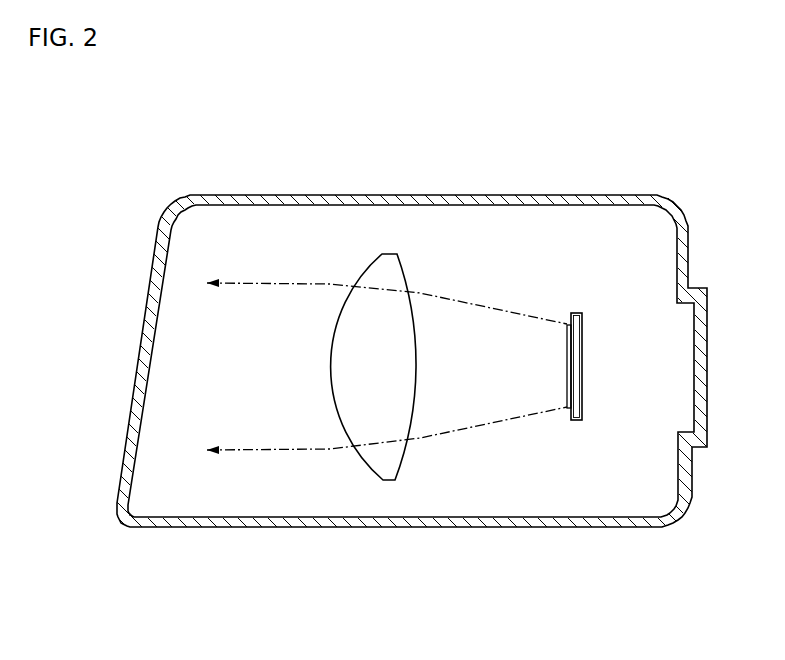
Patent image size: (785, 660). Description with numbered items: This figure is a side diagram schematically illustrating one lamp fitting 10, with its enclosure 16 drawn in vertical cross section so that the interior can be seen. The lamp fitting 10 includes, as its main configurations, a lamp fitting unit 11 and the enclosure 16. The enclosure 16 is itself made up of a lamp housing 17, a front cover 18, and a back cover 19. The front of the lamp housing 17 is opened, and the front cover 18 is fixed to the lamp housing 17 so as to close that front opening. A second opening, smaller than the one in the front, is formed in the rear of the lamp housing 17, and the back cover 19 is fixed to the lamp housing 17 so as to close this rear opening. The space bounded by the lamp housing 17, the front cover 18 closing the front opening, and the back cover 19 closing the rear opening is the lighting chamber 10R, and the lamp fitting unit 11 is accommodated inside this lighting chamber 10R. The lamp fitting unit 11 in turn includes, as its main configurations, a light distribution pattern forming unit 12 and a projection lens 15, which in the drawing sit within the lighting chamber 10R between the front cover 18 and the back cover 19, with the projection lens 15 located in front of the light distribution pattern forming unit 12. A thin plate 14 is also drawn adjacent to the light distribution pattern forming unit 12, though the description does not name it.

The lamp fitting 10 is at (140, 126).
The lighting chamber 10R is at (672, 470).
The lamp fitting unit 11 is at (548, 460).
The light distribution pattern forming unit 12 is at (577, 302).
The filter plate 14 is at (573, 320).
The projection lens 15 is at (378, 275).
The enclosure 16 is at (708, 142).
The lamp housing 17 is at (320, 197).
The front cover 18 is at (243, 197).
The back cover 19 is at (705, 312).